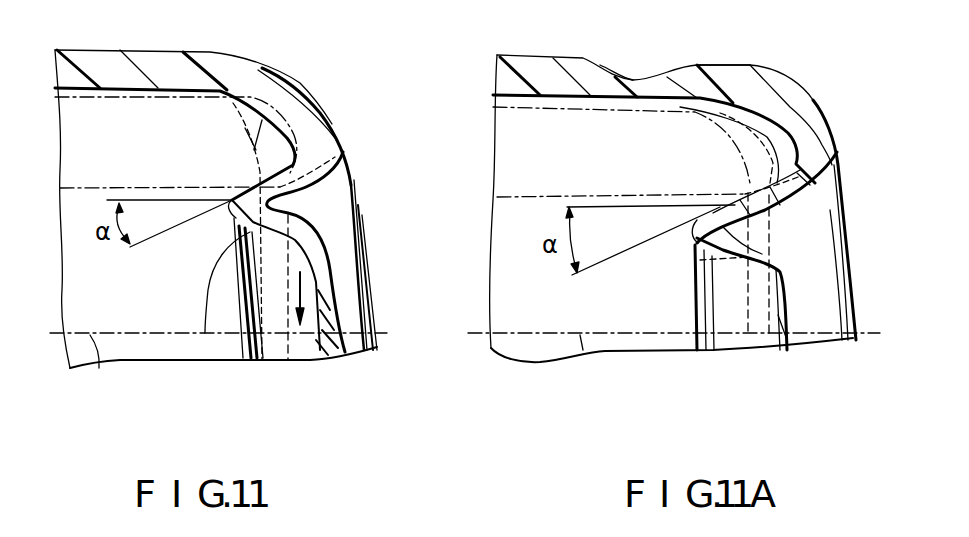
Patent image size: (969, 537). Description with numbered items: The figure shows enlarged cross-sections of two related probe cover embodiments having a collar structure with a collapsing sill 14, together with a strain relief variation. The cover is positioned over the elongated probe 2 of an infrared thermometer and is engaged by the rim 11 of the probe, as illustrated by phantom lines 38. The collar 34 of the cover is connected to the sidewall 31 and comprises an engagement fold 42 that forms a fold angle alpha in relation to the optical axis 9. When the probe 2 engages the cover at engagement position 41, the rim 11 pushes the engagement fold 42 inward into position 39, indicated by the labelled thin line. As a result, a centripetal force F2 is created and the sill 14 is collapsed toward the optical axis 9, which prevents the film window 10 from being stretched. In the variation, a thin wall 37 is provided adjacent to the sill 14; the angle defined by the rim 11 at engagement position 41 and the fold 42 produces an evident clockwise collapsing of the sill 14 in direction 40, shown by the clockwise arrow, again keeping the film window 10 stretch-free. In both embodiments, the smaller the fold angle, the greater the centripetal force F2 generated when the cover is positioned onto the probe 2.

In FIG. 11, the probe 2 is at (103, 160).
In FIG. 11A, the probe 2 is at (557, 160).
In FIG. 11, the optical axis 9 is at (97, 368).
In FIG. 11A, the optical axis 9 is at (583, 335).
In FIG. 11, the film window 10 is at (342, 338).
In FIG. 11A, the film window 10 is at (780, 312).
In FIG. 11, the rim 11 is at (262, 165).
In FIG. 11, the sill 14 is at (343, 150).
In FIG. 11A, the sill 14 is at (836, 147).
In FIG. 11, the sidewall 31 is at (108, 48).
In FIG. 11A, the sidewall 31 is at (527, 53).
In FIG. 11A, the collar 34 is at (767, 55).
In FIG. 11A, the thin wall 37 is at (633, 76).
In FIG. 11, the phantom lines 38 is at (289, 345).
In FIG. 11A, the phantom lines 38 is at (845, 238).
In FIG. 11, the position 39 is at (205, 335).
In FIG. 11A, the direction 40 is at (812, 100).
In FIG. 11, the engagement position 41 is at (353, 173).
In FIG. 11A, the engagement position 41 is at (828, 197).
In FIG. 11, the engagement fold 42 is at (228, 205).
In FIG. 11A, the engagement fold 42 is at (695, 234).
In FIG. 11, the centripetal force F2 is at (305, 295).